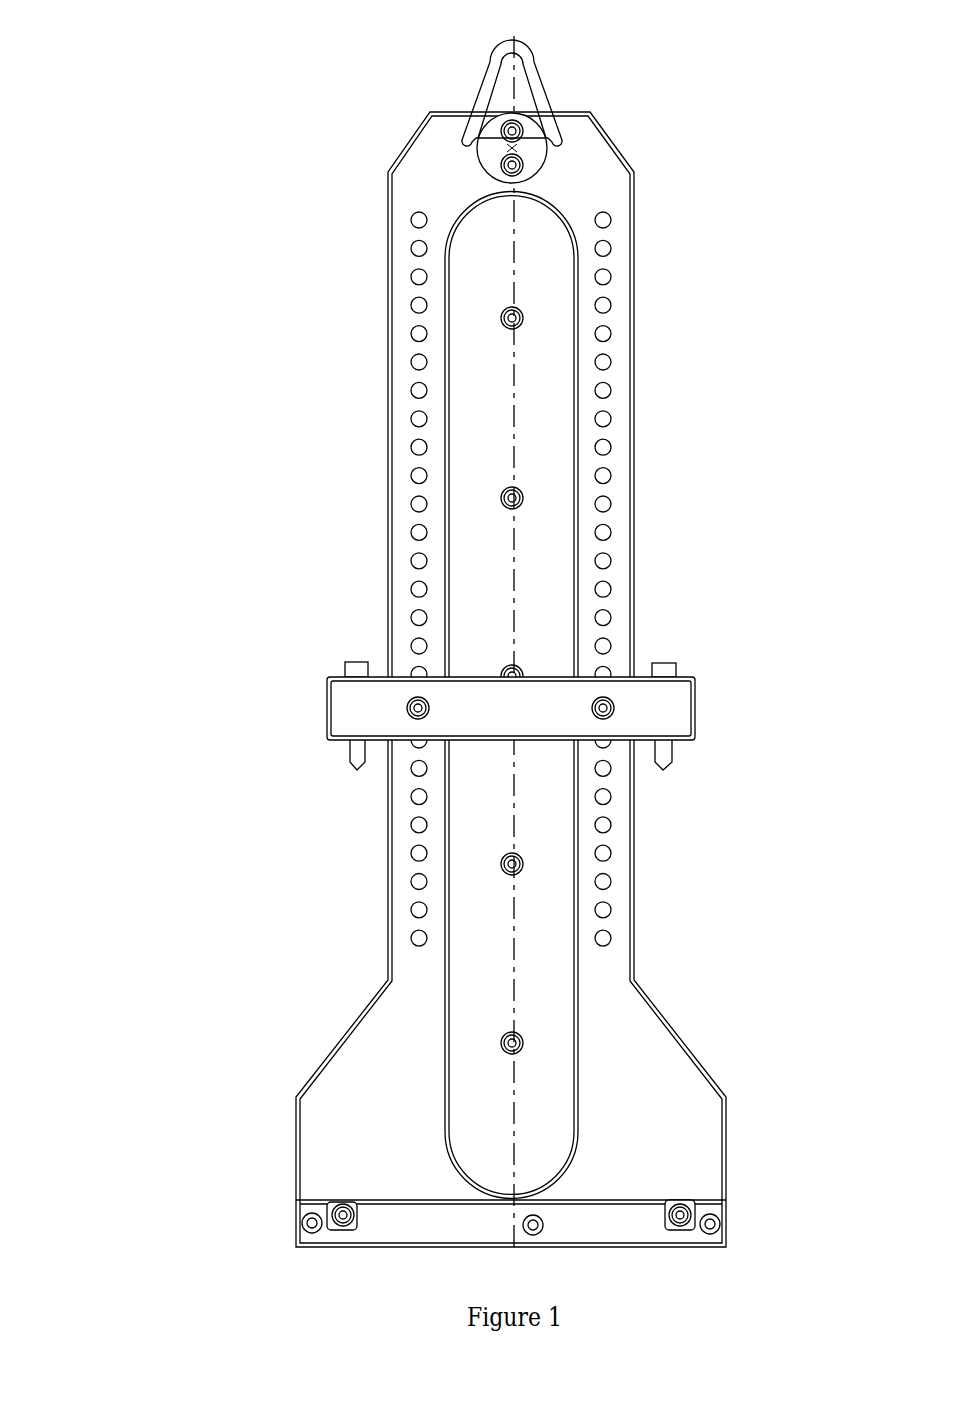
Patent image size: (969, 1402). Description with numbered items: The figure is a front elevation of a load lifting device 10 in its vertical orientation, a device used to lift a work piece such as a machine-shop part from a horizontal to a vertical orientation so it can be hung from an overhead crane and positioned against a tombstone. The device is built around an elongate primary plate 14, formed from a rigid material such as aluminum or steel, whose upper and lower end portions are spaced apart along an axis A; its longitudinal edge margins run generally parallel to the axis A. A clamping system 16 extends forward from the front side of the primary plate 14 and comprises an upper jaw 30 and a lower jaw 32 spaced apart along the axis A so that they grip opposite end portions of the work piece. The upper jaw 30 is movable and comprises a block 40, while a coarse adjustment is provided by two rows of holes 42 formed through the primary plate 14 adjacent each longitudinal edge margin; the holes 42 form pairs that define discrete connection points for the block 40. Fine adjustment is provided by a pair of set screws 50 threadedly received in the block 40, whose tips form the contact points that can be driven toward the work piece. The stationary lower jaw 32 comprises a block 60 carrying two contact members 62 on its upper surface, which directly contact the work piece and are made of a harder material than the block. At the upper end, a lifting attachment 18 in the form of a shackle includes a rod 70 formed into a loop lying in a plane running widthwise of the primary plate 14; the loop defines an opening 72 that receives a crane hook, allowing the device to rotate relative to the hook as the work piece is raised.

The load lifting device 10 is at (780, 102).
The primary plate 14 is at (467, 525).
The clamping system 16 is at (200, 888).
The lifting attachment 18 is at (490, 155).
The upper jaw 30 is at (683, 713).
The lower jaw 32 is at (633, 1223).
The block 40 is at (677, 697).
The holes 42 is at (603, 307).
The set screws 50 is at (358, 662).
The block 60 is at (475, 1227).
The contact members 62 is at (340, 1200).
The rod 70 is at (487, 65).
The opening 72 is at (497, 96).
The axis A is at (515, 245).